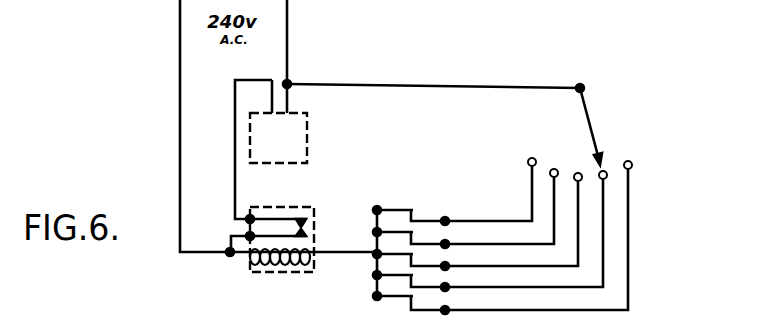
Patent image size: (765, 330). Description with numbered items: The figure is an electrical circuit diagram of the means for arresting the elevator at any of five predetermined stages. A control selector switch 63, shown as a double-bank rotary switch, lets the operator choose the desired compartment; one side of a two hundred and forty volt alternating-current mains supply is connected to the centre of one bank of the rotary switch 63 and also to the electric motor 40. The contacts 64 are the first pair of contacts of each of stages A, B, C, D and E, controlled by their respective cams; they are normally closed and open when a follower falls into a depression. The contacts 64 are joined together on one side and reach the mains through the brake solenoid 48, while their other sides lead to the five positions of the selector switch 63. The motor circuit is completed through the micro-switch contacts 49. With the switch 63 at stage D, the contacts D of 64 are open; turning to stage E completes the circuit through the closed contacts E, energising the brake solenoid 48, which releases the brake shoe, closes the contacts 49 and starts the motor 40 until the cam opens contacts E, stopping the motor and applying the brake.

The electric motor 40 is at (278, 138).
The brake solenoid 48 is at (290, 268).
The micro-switch contacts 49 is at (306, 222).
The control selector switch 63 is at (592, 124).
The first pair of contacts of each stage 64 is at (398, 210).